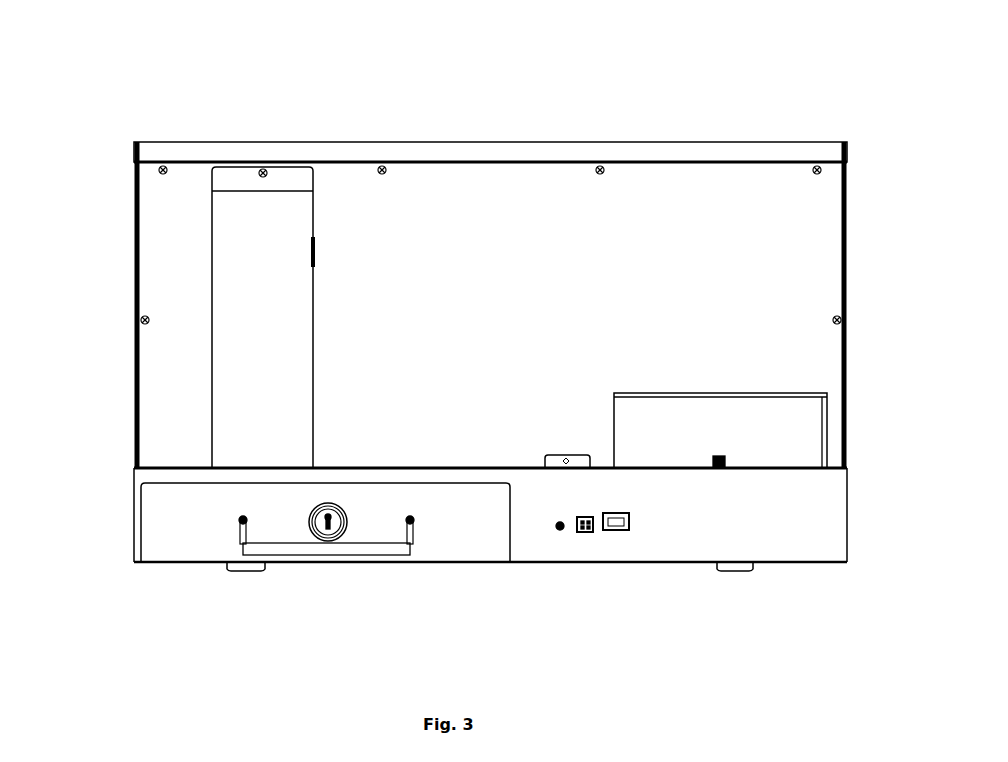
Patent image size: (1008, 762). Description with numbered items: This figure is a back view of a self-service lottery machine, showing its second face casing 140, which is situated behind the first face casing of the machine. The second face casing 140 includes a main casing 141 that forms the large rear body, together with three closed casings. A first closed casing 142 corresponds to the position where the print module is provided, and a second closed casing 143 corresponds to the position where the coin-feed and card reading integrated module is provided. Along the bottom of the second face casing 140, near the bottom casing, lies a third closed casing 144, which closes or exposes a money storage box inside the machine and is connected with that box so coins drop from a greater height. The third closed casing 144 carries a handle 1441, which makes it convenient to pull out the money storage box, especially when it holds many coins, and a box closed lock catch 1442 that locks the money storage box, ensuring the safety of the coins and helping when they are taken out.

The second face casing 140 is at (160, 208).
The main casing 141 is at (510, 272).
The first closed casing 142 is at (722, 432).
The second closed casing 143 is at (270, 363).
The third closed casing 144 is at (185, 531).
The handle 1441 is at (278, 556).
The box closed lock catch 1442 is at (328, 541).